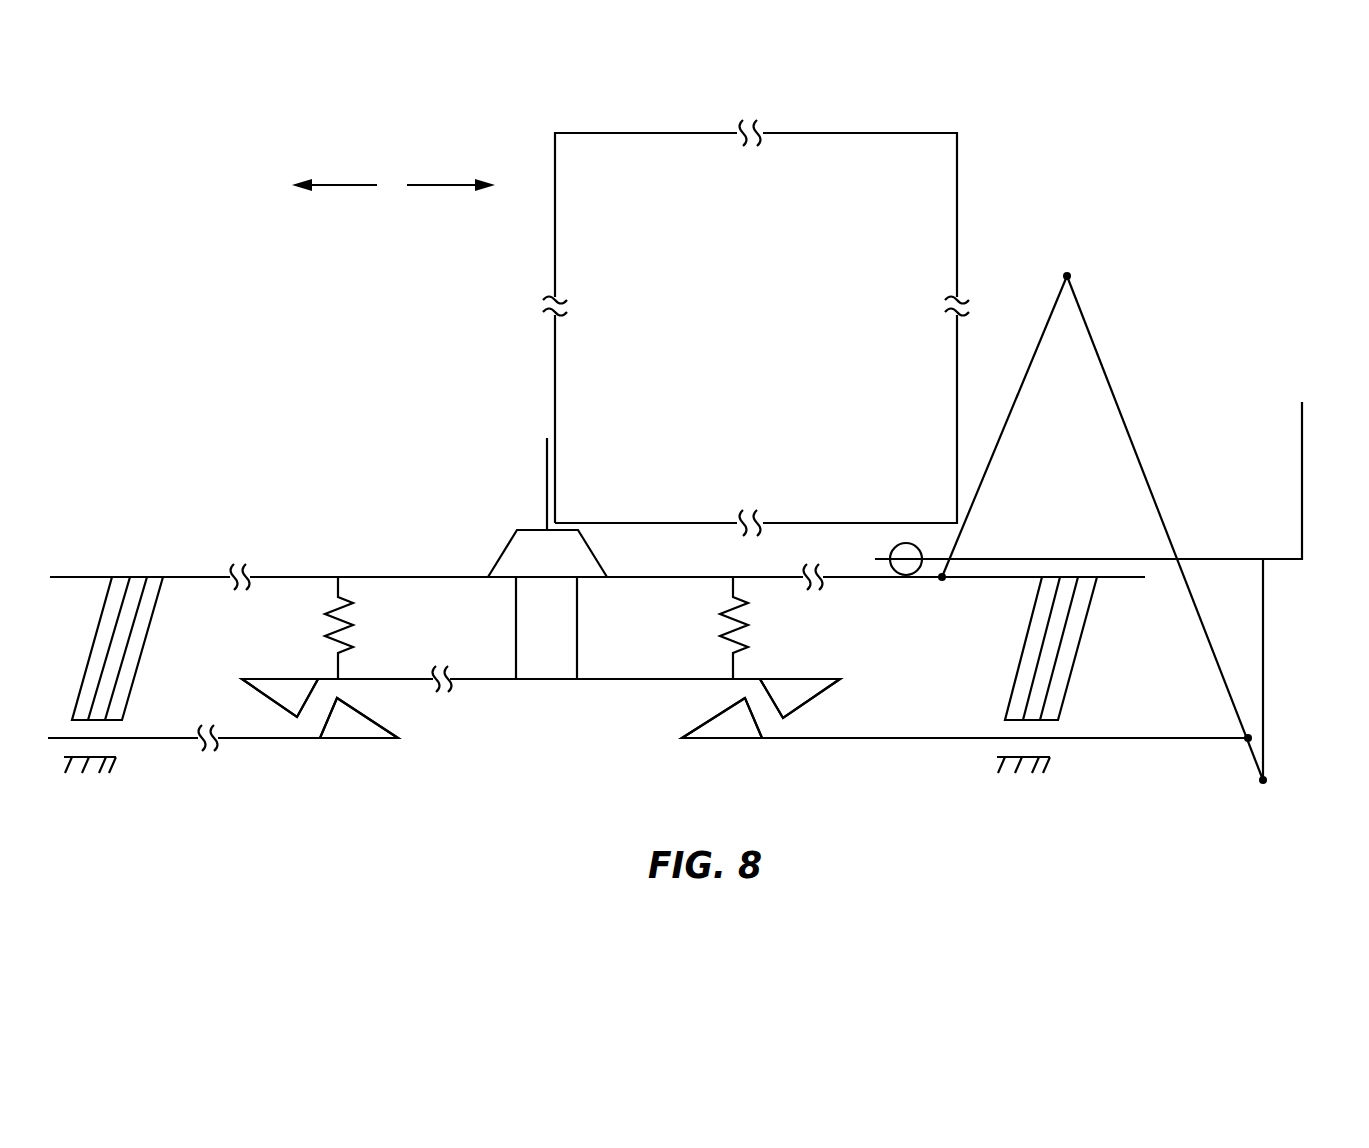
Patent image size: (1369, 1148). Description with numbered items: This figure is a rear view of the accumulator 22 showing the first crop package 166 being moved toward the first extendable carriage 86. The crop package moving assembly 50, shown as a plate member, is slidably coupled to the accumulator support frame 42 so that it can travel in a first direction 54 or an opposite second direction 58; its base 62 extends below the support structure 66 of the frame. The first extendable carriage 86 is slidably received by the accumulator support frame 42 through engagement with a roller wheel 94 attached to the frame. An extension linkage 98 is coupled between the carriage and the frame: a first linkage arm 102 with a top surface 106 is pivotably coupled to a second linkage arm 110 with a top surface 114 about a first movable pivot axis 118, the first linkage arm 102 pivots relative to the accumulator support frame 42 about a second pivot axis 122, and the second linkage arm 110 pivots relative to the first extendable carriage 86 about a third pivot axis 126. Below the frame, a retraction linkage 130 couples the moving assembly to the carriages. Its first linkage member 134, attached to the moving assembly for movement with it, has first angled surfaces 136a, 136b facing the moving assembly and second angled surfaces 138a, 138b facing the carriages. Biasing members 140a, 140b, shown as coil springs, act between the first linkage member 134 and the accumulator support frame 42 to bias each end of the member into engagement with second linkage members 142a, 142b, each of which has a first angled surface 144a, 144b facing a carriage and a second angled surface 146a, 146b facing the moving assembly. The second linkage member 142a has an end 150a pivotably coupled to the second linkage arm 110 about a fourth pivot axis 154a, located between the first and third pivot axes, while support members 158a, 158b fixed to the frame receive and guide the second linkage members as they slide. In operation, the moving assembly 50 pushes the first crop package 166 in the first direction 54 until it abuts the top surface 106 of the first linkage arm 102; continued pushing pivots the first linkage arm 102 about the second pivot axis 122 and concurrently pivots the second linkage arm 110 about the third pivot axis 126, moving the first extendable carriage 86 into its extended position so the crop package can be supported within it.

The accumulator 22 is at (1199, 168).
The accumulator support frame 42 is at (597, 539).
The support structure 66 is at (597, 539).
The crop package moving assembly 50 is at (522, 472).
The first direction 54 is at (451, 164).
The second direction 58 is at (334, 164).
The base 62 is at (532, 531).
The first extendable carriage 86 is at (1115, 580).
The roller wheels 94 is at (889, 523).
The extension linkage 98 is at (1171, 282).
The first linkage arm 102 is at (1004, 414).
The top surface 106 is at (1004, 414).
The second linkage arm 110 is at (1165, 528).
The top surface 114 is at (1165, 528).
The first movable pivot axis 118 is at (1085, 250).
The second pivot axis 122 is at (913, 601).
The third pivot axis 126 is at (1278, 815).
The retraction linkage 130 is at (472, 843).
The first linkage member 134 is at (541, 634).
The first angled surface 136a is at (742, 671).
The first angled surface 136b is at (334, 668).
The second angled surface 138a is at (841, 681).
The second angled surface 138b is at (249, 665).
The biasing member 140a is at (773, 628).
The biasing member 140b is at (348, 596).
The second linkage member 142a is at (965, 775).
The second linkage member 142b is at (223, 774).
The first angled surface 144a is at (756, 753).
The first angled surface 144b is at (333, 764).
The second angled surface 146a is at (674, 725).
The second angled surface 146b is at (395, 750).
The end 150a is at (1177, 767).
The fourth pivot axis 154a is at (1177, 767).
The support member 158a is at (1050, 798).
The support member 158b is at (114, 795).
The first crop package 166 is at (781, 328).